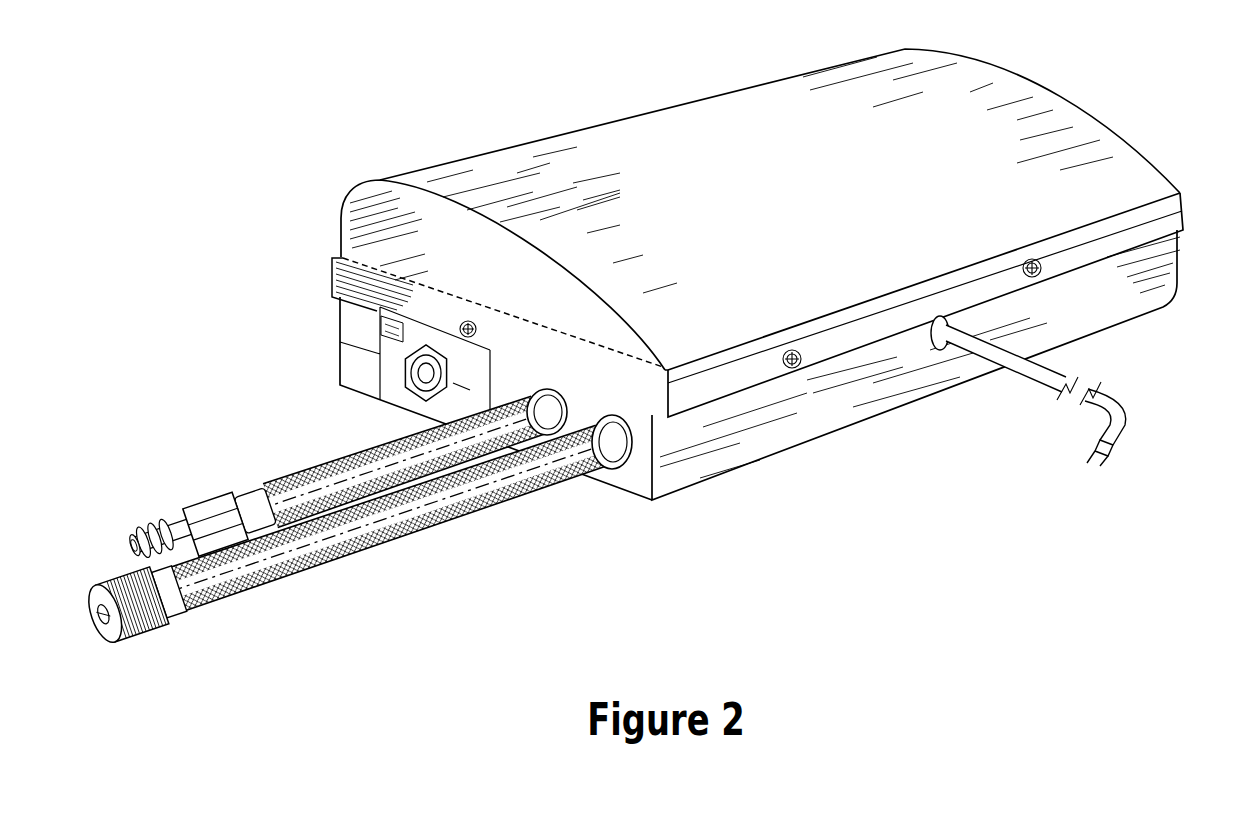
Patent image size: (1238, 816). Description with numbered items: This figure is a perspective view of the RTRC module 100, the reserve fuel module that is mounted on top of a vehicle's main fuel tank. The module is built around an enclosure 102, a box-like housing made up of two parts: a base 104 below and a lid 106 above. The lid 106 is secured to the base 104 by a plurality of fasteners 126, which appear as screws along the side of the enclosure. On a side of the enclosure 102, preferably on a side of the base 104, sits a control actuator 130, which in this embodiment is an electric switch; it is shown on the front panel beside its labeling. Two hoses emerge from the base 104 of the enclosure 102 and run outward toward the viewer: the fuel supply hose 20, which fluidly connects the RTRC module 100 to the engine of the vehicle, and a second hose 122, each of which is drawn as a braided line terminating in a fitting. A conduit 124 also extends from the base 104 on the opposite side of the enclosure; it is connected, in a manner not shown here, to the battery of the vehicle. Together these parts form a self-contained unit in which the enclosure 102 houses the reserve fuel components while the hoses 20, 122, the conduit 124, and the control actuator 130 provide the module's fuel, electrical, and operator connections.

The RTRC module 100 is at (150, 100).
The enclosure 102 is at (310, 154).
The base 104 is at (805, 447).
The lid 106 is at (606, 141).
The fuel supply hose 20 is at (247, 474).
The hose 122 is at (316, 584).
The conduit 124 is at (1138, 409).
The fasteners 126 is at (1058, 286).
The control actuator 130 is at (386, 377).